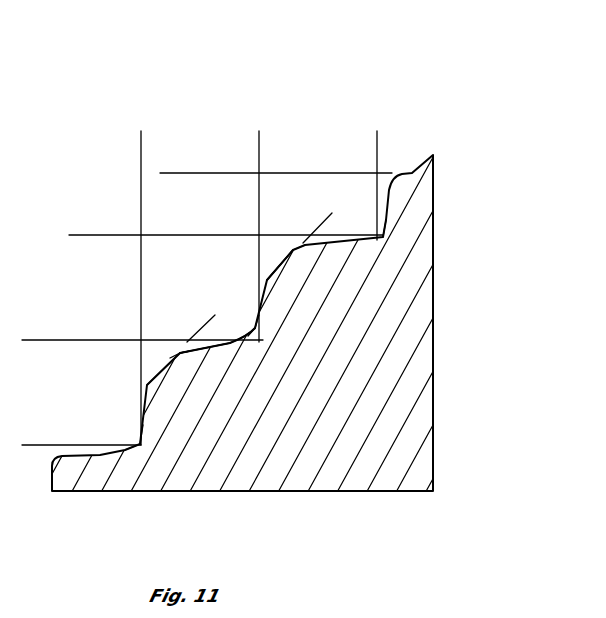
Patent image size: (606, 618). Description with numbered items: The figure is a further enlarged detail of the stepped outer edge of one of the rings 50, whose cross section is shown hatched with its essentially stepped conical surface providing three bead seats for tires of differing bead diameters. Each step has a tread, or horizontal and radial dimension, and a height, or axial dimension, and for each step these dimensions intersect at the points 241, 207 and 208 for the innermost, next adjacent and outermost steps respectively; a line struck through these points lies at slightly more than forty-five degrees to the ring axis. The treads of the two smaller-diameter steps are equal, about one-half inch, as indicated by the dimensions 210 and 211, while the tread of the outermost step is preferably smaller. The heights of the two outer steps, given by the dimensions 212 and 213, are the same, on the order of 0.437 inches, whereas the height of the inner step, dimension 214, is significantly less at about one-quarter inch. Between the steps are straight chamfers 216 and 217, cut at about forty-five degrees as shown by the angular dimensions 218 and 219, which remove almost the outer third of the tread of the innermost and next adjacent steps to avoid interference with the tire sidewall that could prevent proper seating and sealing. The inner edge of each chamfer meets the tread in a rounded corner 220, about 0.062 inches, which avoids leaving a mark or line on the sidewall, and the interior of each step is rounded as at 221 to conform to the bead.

The insert body 50 is at (131, 497).
The intersection point 207 is at (259, 338).
The intersection point 208 is at (140, 442).
The tread dimension 210 is at (141, 140).
The tread dimension 211 is at (377, 140).
The height dimension 212 is at (81, 340).
The height dimension 213 is at (31, 340).
The height dimension 214 is at (169, 173).
The chamfer 216 is at (165, 363).
The chamfer 217 is at (283, 265).
The angular dimension 218 is at (160, 288).
The angular dimension 219 is at (280, 187).
The rounded corner 220 is at (183, 364).
The rounded interior 221 is at (242, 325).
The intersection point 241 is at (378, 236).